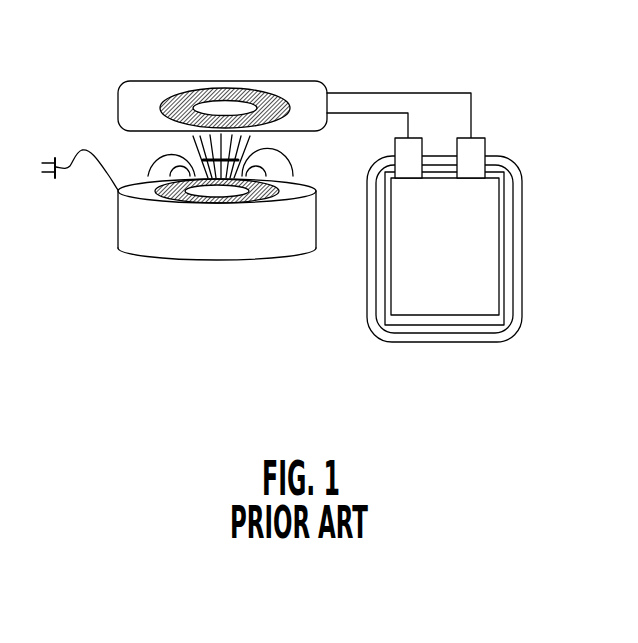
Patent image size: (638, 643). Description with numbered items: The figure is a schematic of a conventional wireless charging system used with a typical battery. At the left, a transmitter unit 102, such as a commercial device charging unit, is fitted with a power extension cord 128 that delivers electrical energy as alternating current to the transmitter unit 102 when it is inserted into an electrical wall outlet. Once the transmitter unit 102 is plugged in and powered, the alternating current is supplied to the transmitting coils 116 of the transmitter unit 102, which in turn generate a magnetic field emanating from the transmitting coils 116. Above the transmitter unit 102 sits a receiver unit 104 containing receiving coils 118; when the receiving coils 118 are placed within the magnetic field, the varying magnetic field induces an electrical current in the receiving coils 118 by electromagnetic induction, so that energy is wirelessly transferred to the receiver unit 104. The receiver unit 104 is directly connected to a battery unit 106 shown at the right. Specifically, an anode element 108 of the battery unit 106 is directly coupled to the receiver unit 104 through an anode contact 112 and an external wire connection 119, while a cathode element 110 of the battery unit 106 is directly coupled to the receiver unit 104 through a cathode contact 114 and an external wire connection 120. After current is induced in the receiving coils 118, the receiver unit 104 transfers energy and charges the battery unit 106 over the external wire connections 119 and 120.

The transmitter unit 102 is at (163, 258).
The receiver unit 104 is at (155, 81).
The battery unit 106 is at (468, 340).
The anode element 108 is at (487, 295).
The cathode element 110 is at (403, 318).
The anode contact 112 is at (395, 140).
The cathode contact 114 is at (485, 138).
The transmitting coils 116 is at (152, 190).
The receiving coils 118 is at (160, 108).
The external wire connection 119 is at (358, 113).
The external wire connection 120 is at (432, 93).
The power extension cord 128 is at (108, 178).